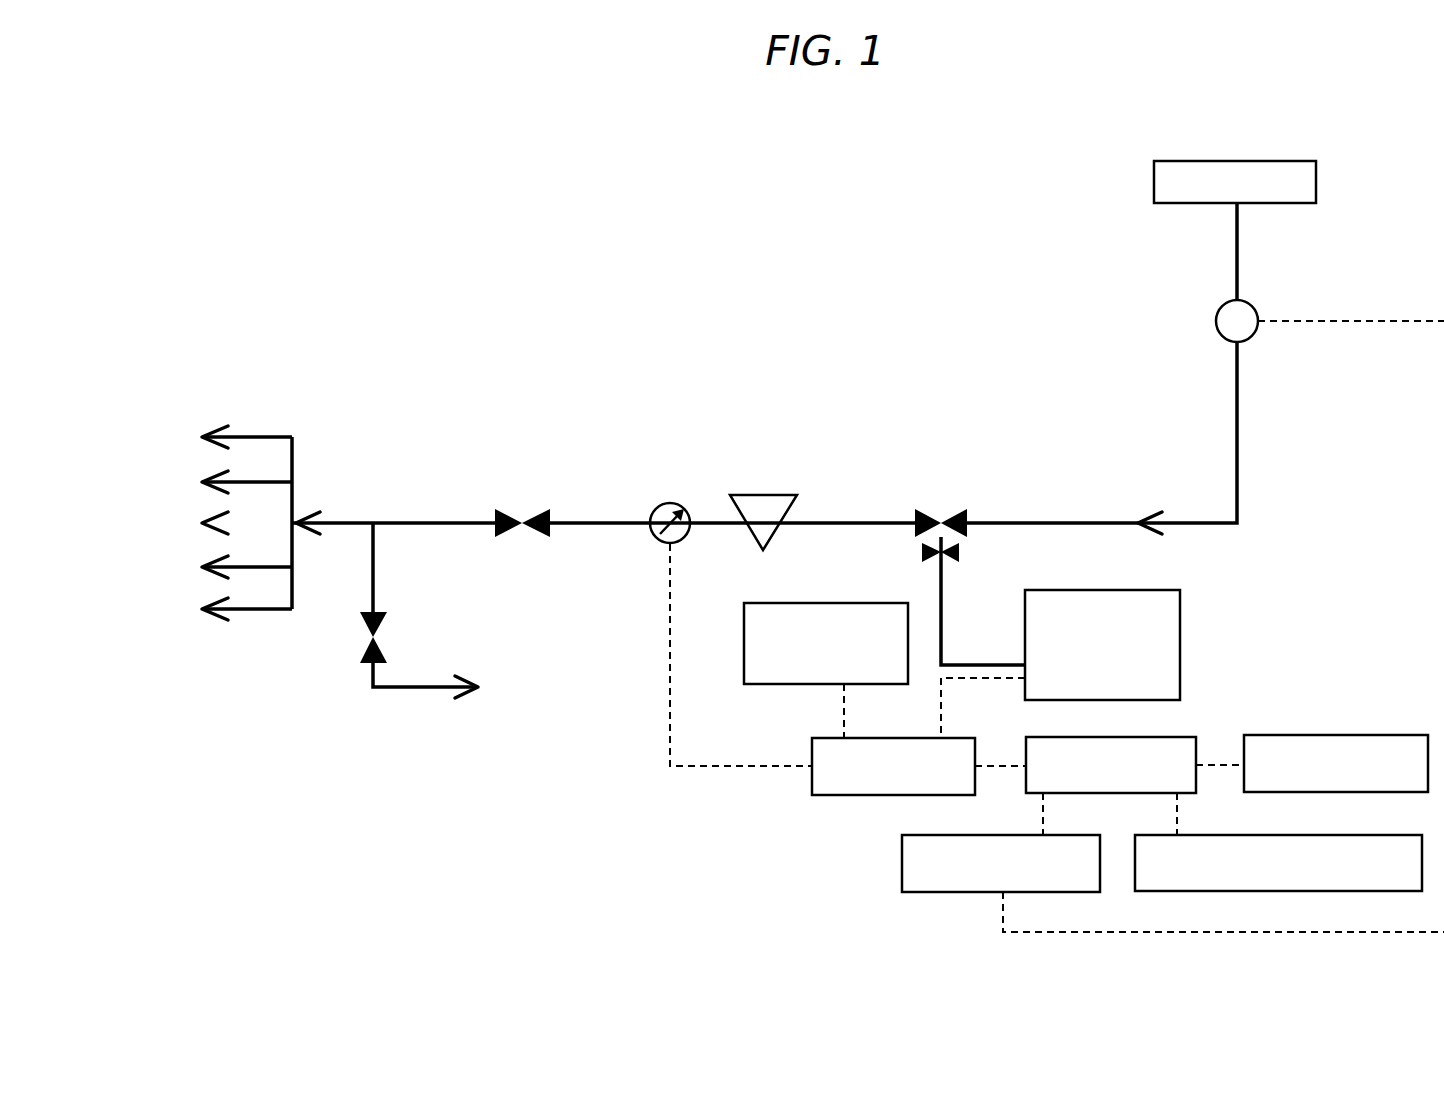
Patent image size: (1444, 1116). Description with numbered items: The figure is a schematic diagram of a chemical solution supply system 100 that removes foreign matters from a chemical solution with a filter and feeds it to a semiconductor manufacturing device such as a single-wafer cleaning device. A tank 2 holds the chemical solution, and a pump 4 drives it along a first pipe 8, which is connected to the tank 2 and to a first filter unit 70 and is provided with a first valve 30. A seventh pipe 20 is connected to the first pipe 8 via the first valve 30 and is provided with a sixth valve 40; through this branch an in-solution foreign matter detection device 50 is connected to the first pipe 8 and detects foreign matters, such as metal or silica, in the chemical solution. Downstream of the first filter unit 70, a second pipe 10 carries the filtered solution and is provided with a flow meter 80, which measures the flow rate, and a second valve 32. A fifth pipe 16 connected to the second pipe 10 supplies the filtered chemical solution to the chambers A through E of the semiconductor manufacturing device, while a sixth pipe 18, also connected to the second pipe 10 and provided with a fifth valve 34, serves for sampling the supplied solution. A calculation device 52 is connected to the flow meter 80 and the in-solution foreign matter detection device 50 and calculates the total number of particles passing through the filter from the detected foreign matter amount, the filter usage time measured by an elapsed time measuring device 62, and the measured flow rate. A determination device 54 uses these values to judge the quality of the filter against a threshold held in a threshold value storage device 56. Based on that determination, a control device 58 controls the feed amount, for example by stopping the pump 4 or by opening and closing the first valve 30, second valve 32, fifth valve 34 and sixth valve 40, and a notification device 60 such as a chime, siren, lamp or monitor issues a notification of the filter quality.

The chemical solution supply system 100 is at (1362, 165).
The tank 2 is at (1275, 161).
The pump 4 is at (1258, 308).
The first pipe 8 is at (1082, 527).
The first valve 30 is at (928, 511).
The sixth valve 40 is at (960, 554).
The seventh pipe 20 is at (985, 664).
The in-solution foreign matter detection device 50 is at (1177, 590).
The second pipe 10 is at (583, 522).
The second valve 32 is at (508, 512).
The flow meter 80 is at (675, 505).
The first filter unit 70 is at (745, 494).
The fifth pipe 16 is at (244, 408).
The sixth pipe 18 is at (418, 687).
The fifth valve 34 is at (381, 612).
The elapsed time measuring device 62 is at (840, 603).
The calculation device 52 is at (855, 795).
The determination device 54 is at (1175, 737).
The threshold value storage device 56 is at (1393, 735).
The control device 58 is at (970, 835).
The notification device 60 is at (1198, 835).